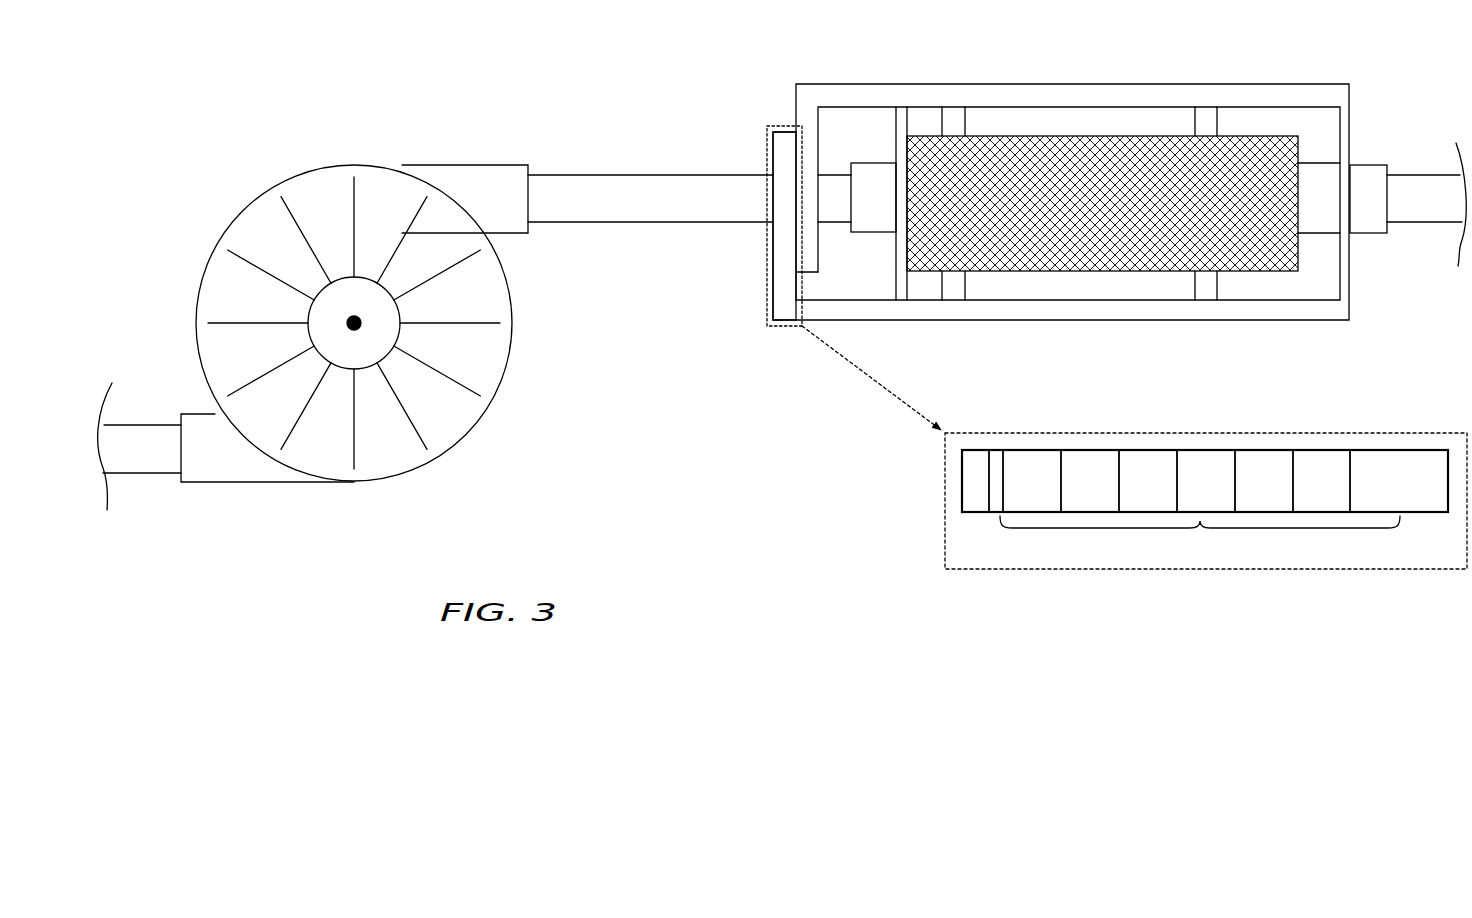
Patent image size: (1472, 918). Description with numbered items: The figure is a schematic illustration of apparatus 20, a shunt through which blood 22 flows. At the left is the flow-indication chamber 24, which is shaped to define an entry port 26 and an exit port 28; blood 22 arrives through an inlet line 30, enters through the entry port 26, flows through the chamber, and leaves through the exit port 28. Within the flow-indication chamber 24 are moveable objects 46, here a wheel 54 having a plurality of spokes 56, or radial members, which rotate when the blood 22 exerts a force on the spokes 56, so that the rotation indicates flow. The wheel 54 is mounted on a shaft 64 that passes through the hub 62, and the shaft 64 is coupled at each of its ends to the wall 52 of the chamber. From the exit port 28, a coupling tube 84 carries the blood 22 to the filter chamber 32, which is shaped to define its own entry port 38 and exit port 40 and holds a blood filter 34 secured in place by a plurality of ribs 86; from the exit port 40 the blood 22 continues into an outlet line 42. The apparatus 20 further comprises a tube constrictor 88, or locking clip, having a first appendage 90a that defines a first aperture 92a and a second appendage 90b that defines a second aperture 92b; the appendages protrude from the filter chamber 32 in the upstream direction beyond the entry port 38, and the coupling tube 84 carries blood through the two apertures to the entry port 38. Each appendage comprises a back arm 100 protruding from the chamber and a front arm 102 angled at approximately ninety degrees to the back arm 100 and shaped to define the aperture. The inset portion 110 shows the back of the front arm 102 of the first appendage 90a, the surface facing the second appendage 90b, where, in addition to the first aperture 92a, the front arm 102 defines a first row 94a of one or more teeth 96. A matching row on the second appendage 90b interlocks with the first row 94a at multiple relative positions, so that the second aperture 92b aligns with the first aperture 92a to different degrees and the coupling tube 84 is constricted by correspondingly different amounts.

The apparatus 20 is at (177, 125).
The blood 22 is at (161, 465).
The flow-indication chamber 24 is at (296, 170).
The entry port 26 is at (204, 483).
The exit port 28 is at (474, 164).
The inlet conduit 30 is at (154, 425).
The filter chamber 32 is at (1353, 278).
The blood filter 34 is at (1272, 271).
The entry port 38 is at (872, 163).
The exit port 40 is at (1370, 165).
The outlet conduit 42 is at (1413, 175).
The moveable objects 46 is at (492, 362).
The wall 52 is at (249, 215).
The wheel 54 is at (586, 394).
The spokes 56 is at (477, 321).
The hub 62 is at (344, 276).
The shaft 64 is at (352, 328).
The coupling tube 84 is at (558, 175).
The ribs 86 is at (967, 283).
The tube constrictor 88 is at (772, 106).
The first appendage 90a is at (773, 148).
The second appendage 90b is at (822, 268).
The first aperture 92a is at (772, 198).
The second aperture 92b is at (819, 198).
The first row 94a is at (1200, 541).
The teeth 96 is at (1128, 470).
The back arm 100 is at (833, 85).
The front arm 102 is at (767, 285).
The inset portion 110 is at (988, 570).